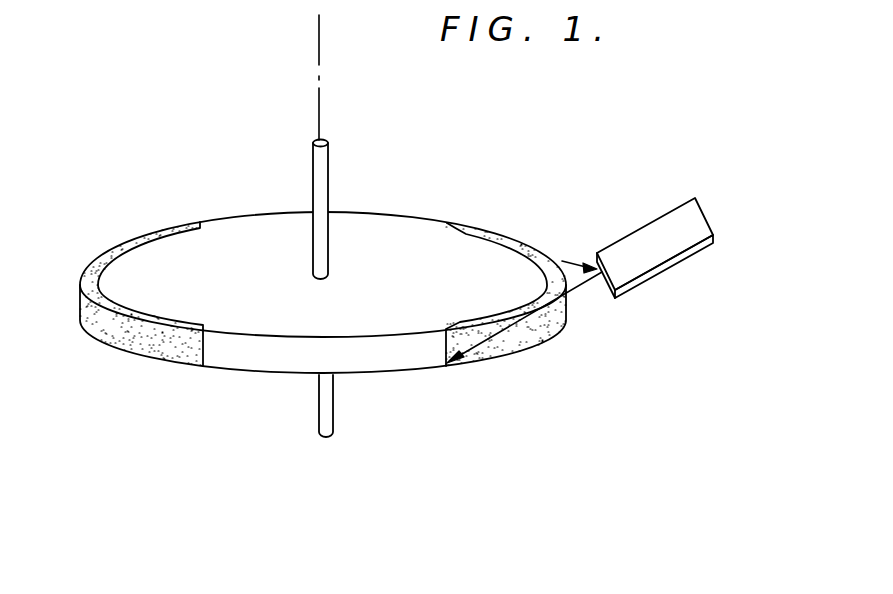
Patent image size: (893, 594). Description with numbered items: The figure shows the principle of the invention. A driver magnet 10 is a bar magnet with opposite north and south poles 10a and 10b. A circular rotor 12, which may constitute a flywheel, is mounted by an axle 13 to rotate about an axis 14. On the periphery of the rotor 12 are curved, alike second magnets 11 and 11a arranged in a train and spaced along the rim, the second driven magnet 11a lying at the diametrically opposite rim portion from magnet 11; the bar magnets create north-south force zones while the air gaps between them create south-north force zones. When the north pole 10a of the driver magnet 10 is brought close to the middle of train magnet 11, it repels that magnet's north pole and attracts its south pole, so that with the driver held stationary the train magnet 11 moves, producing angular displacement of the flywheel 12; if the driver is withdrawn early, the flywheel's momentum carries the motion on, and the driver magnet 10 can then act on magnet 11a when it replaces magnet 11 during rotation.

The driver magnet 10 is at (652, 250).
The north pole of driver magnet 10a is at (603, 258).
The south pole of driver magnet 10b is at (685, 207).
The second magnet 11 is at (545, 328).
The second driven magnet 11a is at (87, 322).
The rotor 12 is at (323, 292).
The axle 13 is at (333, 418).
The axis 14 is at (317, 45).